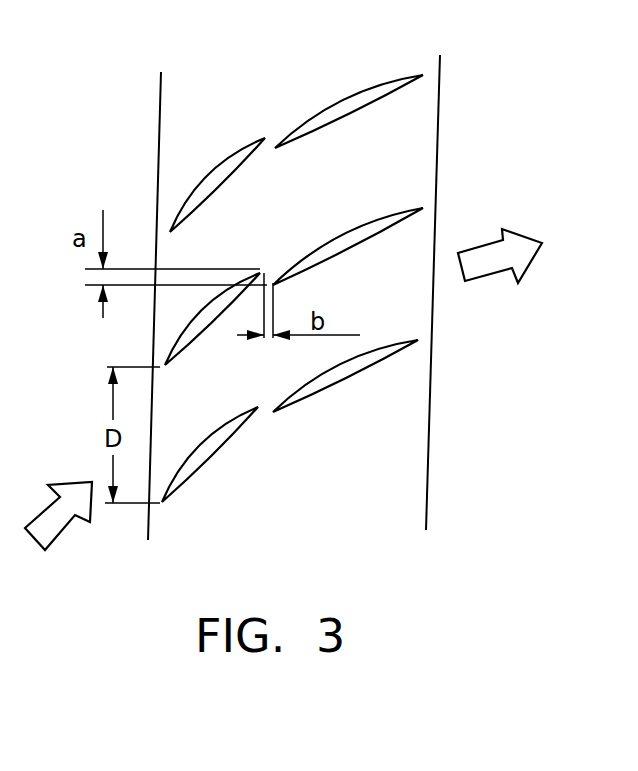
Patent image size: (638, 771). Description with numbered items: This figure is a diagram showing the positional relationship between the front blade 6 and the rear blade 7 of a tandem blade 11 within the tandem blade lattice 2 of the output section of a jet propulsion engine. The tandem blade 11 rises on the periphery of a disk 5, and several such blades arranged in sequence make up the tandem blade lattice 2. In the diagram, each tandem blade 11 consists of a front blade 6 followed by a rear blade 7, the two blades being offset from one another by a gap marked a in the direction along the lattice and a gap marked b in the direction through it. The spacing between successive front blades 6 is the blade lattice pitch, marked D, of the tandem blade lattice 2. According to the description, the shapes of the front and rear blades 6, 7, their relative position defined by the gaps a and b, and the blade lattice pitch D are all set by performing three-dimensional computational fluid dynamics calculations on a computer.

The tandem blade lattice 2 is at (284, 424).
The disk 5 is at (440, 118).
The front blade 6 is at (237, 150).
The rear blade 7 is at (342, 102).
The tandem blade 11 is at (299, 11).